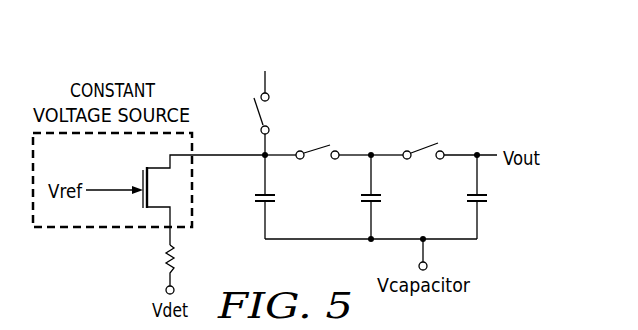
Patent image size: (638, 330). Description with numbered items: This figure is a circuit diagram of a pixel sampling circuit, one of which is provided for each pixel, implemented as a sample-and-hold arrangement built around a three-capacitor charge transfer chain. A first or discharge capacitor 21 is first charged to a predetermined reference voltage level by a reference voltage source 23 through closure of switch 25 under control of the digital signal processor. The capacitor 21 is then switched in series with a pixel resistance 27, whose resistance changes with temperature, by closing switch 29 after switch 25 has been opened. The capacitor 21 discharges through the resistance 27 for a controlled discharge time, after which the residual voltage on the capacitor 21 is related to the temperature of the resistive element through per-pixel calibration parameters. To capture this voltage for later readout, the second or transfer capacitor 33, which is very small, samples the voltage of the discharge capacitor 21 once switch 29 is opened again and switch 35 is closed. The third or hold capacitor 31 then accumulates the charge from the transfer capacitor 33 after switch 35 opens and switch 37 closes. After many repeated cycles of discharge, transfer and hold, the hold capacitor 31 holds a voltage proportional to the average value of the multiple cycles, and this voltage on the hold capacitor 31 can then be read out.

The capacitor 21 is at (277, 198).
The reference voltage source 23 is at (298, 58).
The switch 25 is at (253, 112).
The pixel resistance 27 is at (165, 255).
The switch 29 is at (141, 174).
The hold capacitor 31 is at (489, 198).
The transfer capacitor 33 is at (383, 198).
The switch 35 is at (320, 147).
The switch 37 is at (425, 147).